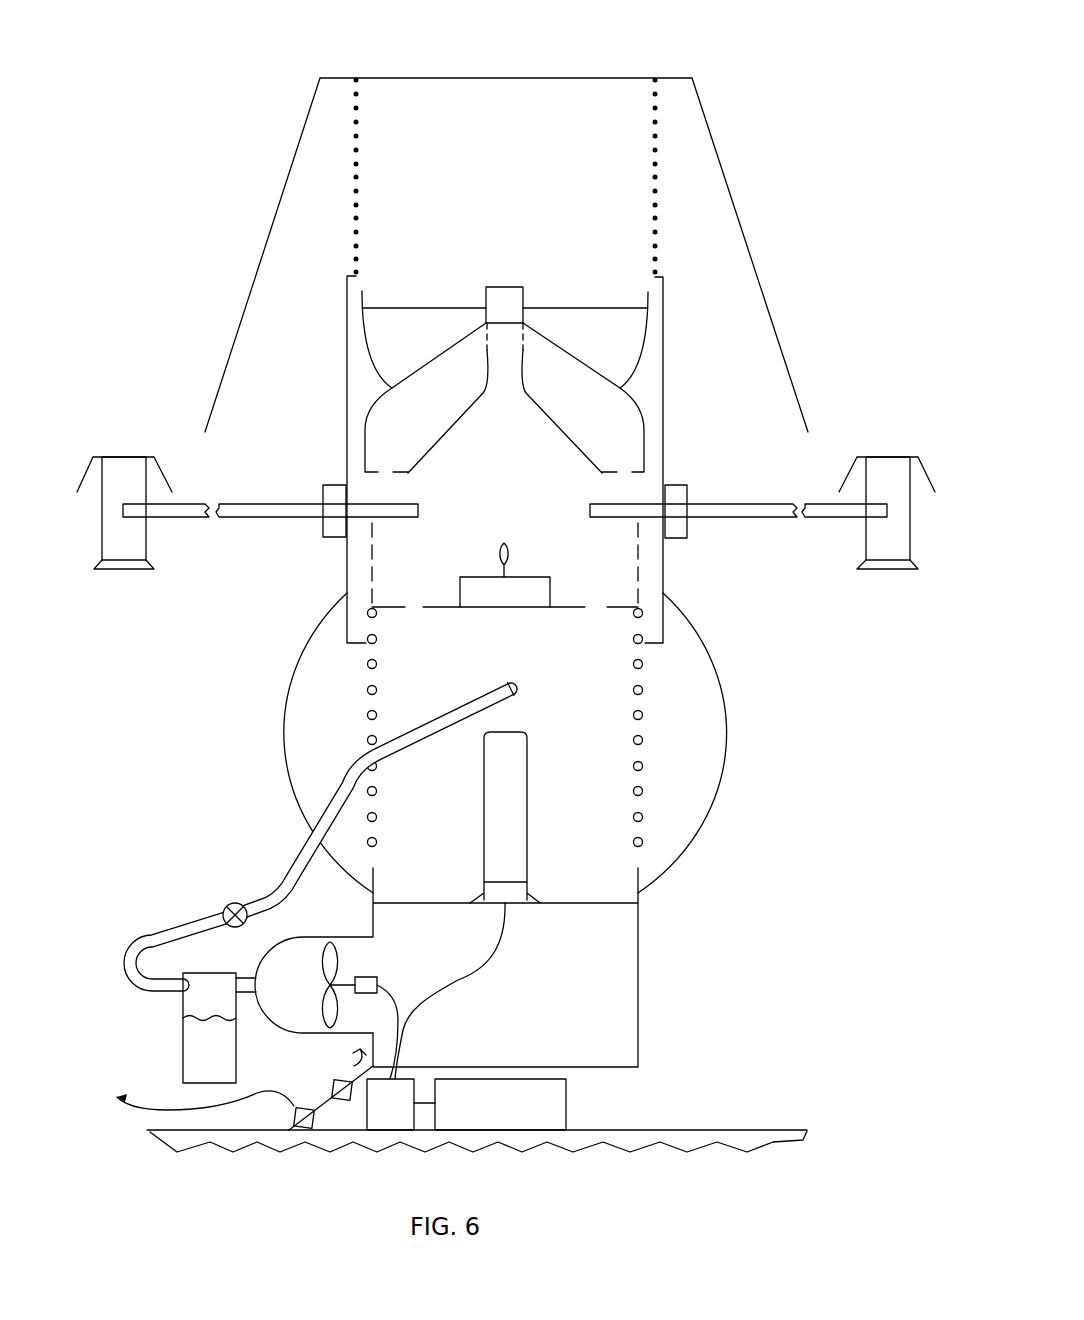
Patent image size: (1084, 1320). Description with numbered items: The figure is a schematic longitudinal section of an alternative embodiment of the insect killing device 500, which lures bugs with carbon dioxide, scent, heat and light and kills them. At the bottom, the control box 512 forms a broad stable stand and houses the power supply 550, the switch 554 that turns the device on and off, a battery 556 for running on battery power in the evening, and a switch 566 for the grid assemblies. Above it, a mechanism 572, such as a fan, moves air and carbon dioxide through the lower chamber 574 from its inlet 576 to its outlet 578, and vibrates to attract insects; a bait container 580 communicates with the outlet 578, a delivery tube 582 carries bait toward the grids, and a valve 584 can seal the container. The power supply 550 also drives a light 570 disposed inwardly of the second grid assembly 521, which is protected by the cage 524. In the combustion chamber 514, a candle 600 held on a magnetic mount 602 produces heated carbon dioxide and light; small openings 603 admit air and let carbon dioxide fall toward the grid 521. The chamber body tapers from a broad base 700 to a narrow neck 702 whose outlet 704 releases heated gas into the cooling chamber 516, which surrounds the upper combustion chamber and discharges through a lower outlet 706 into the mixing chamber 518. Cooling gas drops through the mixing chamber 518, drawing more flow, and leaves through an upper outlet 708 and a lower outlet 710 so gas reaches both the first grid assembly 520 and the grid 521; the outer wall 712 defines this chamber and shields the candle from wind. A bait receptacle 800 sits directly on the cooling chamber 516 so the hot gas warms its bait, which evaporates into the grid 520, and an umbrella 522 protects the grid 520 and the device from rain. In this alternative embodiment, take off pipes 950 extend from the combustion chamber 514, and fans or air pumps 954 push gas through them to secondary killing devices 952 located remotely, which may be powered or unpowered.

The insect killing device 500 is at (124, 56).
The control box 512 is at (477, 1083).
The combustion chamber 514 is at (688, 554).
The cooling chamber 516 is at (679, 422).
The mixing chamber 518 is at (416, 562).
The first grid assembly 520 is at (506, 255).
The second grid assembly 521 is at (430, 728).
The umbrella 522 is at (168, 1108).
The cage 524 is at (707, 650).
The power supply 550 is at (403, 1078).
The switch 554 is at (293, 1112).
The battery 556 is at (543, 1108).
The switch for the grid assemblies 566 is at (335, 1075).
The light 570 is at (486, 840).
The mechanism that moves air 572 is at (370, 977).
The lower chamber 574 is at (608, 1010).
The inlet 576 is at (576, 908).
The outlet 578 is at (250, 985).
The bait container 580 is at (188, 1005).
The delivery tube 582 is at (293, 884).
The valve 584 is at (229, 905).
The candle 600 is at (488, 528).
The mount 602 is at (500, 610).
The openings 603 is at (372, 576).
The broad base 700 is at (372, 553).
The narrow neck 702 is at (527, 394).
The outlet 704 is at (524, 330).
The outlet 706 is at (604, 470).
The upper outlet 708 is at (668, 292).
The lower outlet 710 is at (346, 635).
The outer wall 712 is at (347, 392).
The bait receptacle 800 is at (378, 343).
The take off pipes 950 is at (435, 442).
The secondary killing devices 952 is at (503, 514).
The fans or air pumps 954 is at (323, 487).